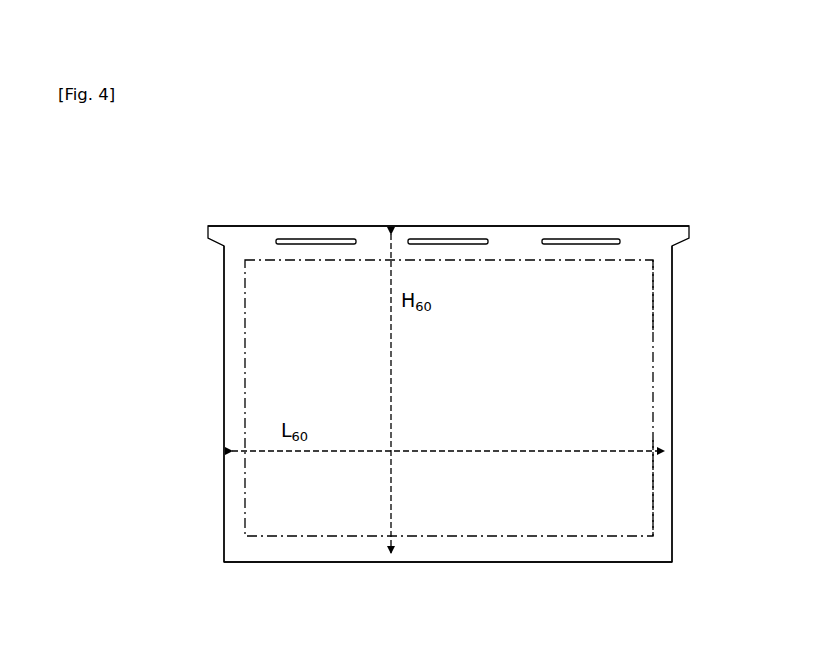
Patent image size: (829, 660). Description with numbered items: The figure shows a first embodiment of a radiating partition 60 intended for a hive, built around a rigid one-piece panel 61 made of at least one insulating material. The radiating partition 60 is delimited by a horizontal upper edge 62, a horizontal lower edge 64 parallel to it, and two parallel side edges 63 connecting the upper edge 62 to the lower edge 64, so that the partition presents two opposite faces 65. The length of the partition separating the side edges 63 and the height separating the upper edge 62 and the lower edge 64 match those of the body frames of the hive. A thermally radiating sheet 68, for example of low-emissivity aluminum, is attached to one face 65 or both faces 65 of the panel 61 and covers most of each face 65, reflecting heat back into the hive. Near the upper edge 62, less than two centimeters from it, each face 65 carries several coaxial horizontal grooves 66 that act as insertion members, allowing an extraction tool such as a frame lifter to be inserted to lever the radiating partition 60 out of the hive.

The radiating partition 60 is at (174, 221).
The rigid one-piece panel 61 is at (236, 341).
The upper edge 62 is at (262, 225).
The side edges 63 is at (224, 394).
The lower edge 64 is at (582, 563).
The face 65 is at (662, 499).
The groove 66 is at (314, 240).
The sheet 68 is at (653, 293).